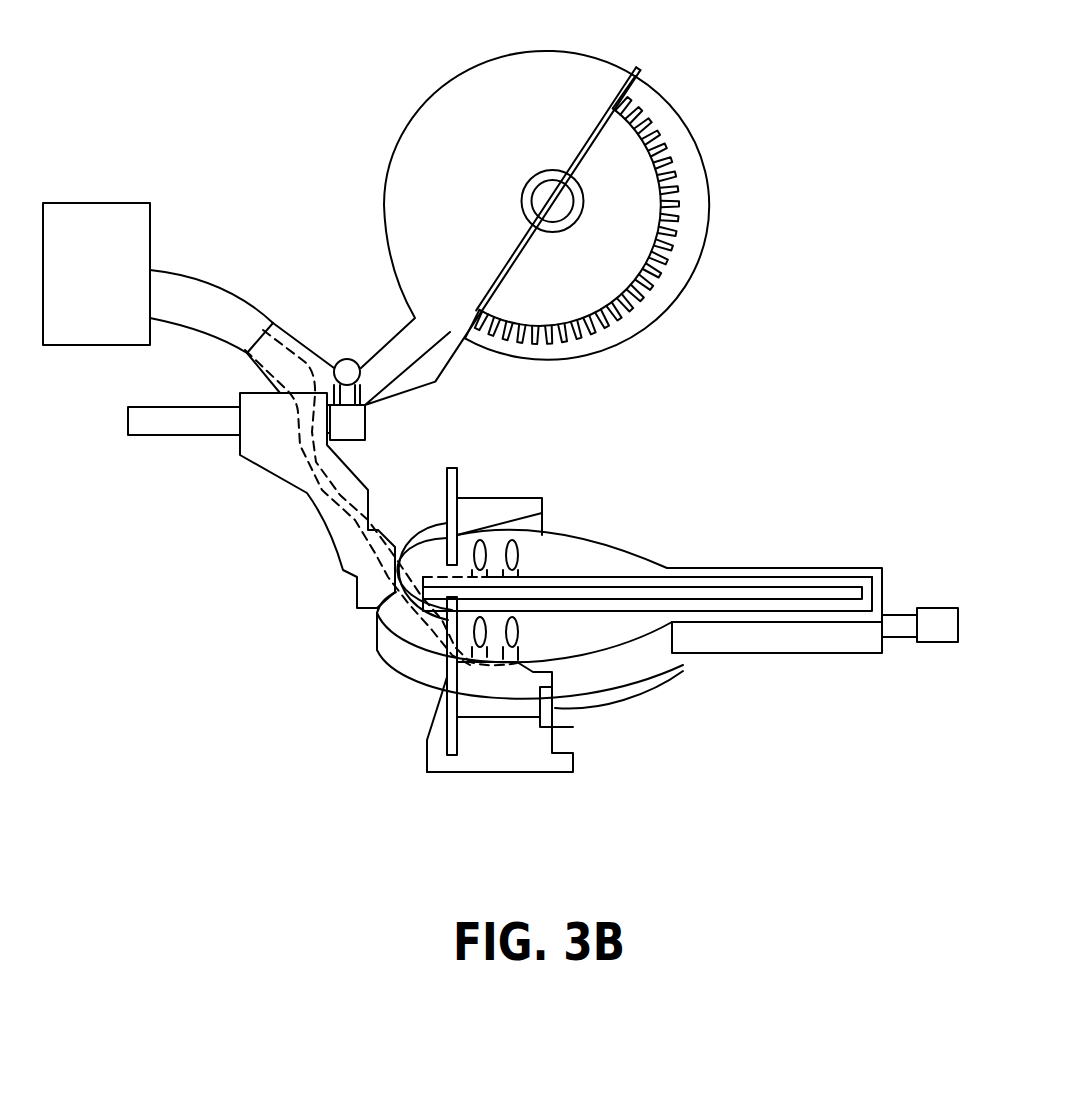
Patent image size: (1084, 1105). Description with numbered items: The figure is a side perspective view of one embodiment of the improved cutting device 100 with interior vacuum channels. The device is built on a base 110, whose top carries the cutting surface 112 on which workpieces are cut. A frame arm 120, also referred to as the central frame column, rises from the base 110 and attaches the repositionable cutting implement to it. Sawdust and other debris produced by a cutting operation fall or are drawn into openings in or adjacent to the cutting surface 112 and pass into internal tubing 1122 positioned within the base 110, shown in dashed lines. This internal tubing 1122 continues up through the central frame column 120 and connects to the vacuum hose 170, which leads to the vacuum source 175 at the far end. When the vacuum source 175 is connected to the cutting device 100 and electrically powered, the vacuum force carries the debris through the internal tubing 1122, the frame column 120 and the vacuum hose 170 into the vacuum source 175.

The cutting device 100 is at (733, 240).
The base 110 is at (656, 653).
The cutting surface 112 is at (610, 560).
The frame arm 120 is at (249, 500).
The vacuum hose 170 is at (217, 347).
The vacuum source 175 is at (115, 232).
The internal tubing 1122 is at (372, 565).